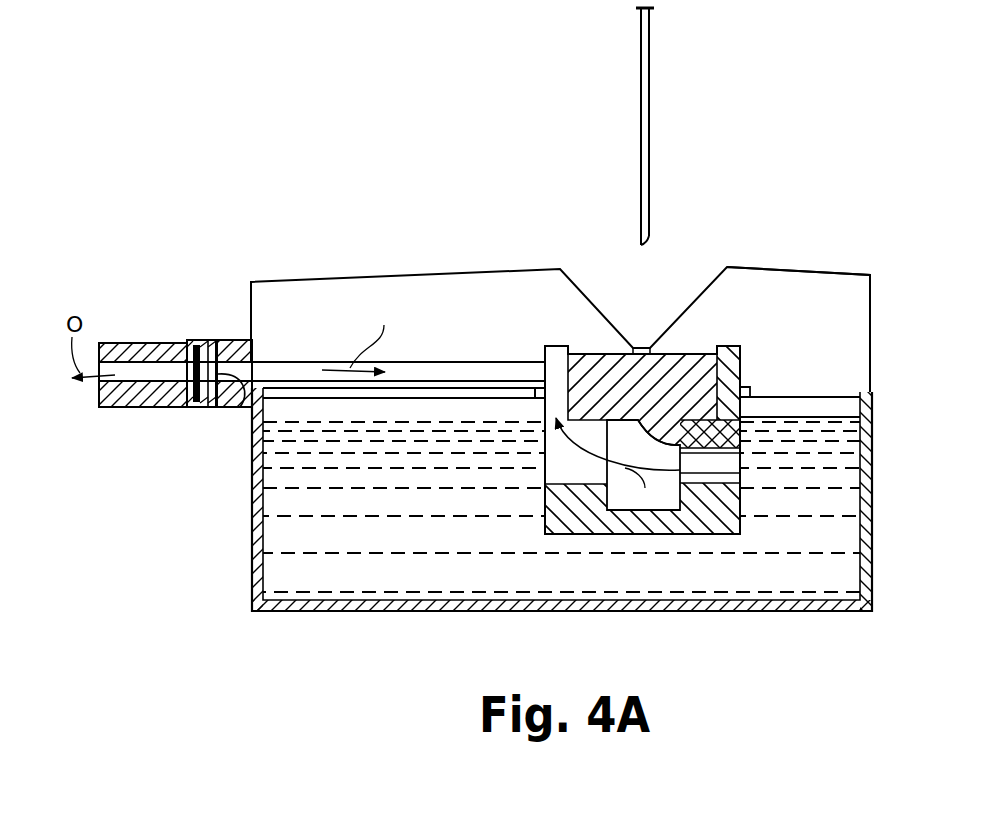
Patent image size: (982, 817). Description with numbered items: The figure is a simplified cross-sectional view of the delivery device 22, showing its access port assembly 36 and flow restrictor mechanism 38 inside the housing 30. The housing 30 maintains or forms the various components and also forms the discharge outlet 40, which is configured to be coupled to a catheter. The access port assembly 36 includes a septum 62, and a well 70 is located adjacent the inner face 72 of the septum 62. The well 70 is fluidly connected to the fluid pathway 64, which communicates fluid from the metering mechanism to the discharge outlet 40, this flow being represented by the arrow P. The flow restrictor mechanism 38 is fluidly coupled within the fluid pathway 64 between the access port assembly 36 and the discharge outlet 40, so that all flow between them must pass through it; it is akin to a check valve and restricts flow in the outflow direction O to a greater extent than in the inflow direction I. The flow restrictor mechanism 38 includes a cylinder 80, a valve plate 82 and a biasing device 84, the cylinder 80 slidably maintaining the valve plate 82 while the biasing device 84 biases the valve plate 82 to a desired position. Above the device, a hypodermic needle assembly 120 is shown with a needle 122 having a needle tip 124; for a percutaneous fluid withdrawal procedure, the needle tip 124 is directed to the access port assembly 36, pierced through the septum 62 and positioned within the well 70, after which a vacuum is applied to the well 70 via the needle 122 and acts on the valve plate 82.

The hypodermic needle assembly 120 is at (652, 70).
The needle 122 is at (652, 143).
The needle tip 124 is at (649, 238).
The delivery device 22 is at (867, 148).
The access port assembly 36 is at (771, 334).
The housing 30 is at (411, 616).
The discharge outlet 40 is at (110, 408).
The flow restrictor mechanism 38 is at (202, 331).
The cylinder 80 is at (203, 410).
The valve plate 82 is at (218, 343).
The biasing device 84 is at (243, 388).
The fluid pathway 64 is at (449, 359).
The septum 62 is at (688, 352).
The inner face 72 is at (705, 438).
The well 70 is at (671, 500).